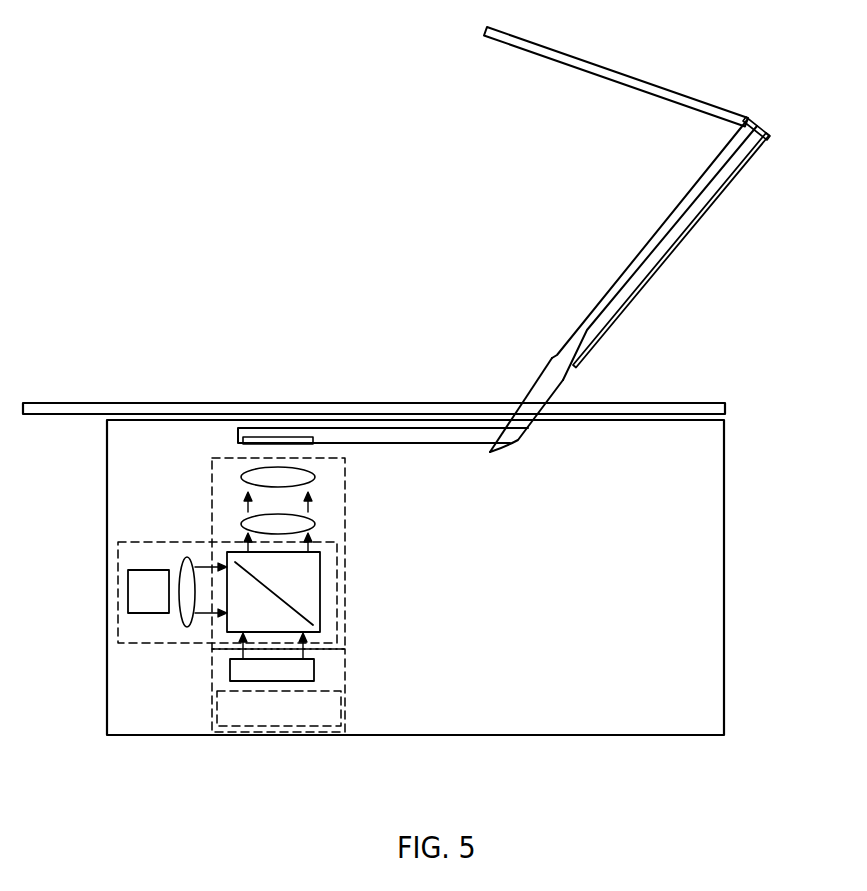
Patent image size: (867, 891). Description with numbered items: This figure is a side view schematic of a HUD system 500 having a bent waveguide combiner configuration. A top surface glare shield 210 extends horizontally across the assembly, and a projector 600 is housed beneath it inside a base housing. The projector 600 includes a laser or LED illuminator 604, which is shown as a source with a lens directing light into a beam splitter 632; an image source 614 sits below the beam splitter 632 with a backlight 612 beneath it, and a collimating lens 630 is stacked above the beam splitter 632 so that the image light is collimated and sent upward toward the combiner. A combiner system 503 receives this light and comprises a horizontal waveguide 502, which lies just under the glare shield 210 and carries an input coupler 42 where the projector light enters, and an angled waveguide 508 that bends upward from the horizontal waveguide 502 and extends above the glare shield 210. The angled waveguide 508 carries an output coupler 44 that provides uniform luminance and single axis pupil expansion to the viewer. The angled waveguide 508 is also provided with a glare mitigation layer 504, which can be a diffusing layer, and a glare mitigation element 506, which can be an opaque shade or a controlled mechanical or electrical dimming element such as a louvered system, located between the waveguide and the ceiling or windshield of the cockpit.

The HUD system 500 is at (470, 200).
The glare mitigation element 506 is at (605, 68).
The angled waveguide 508 is at (770, 128).
The glare mitigation layer 504 is at (637, 258).
The output coupler 44 is at (718, 193).
The combiner system 503 is at (513, 337).
The top surface glare shield 210 is at (90, 403).
The horizontal waveguide 502 is at (462, 446).
The input coupler 42 is at (308, 445).
The projector 600 is at (417, 628).
The collimating lens 630 is at (345, 520).
The beam splitter 632 is at (308, 574).
The laser or LED illuminator 604 is at (178, 647).
The image source 614 is at (314, 669).
The backlight 612 is at (316, 722).